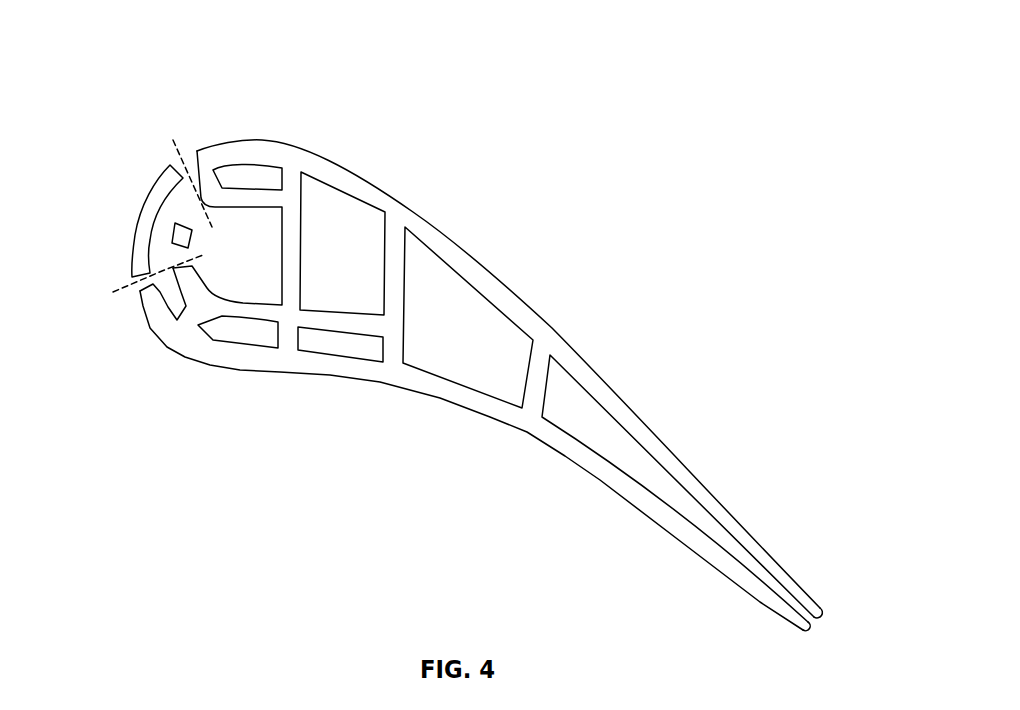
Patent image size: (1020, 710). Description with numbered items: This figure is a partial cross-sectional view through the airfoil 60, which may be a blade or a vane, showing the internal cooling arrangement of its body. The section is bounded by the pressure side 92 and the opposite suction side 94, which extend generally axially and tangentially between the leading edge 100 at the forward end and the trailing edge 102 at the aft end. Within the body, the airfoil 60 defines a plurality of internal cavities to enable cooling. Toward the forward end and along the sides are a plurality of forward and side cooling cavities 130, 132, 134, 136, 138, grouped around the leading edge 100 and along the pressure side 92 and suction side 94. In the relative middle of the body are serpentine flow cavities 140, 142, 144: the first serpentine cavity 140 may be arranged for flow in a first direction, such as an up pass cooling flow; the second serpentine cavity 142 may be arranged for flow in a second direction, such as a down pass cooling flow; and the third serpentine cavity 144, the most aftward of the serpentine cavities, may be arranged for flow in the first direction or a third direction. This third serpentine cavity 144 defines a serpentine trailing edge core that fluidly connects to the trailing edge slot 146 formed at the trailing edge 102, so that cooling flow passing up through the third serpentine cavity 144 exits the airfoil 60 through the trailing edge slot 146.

The airfoil 60 is at (474, 360).
The pressure side 92 is at (527, 432).
The suction side 94 is at (482, 260).
The leading edge 100 is at (130, 232).
The trailing edge 102 is at (817, 620).
The forward and side cooling cavity 130 is at (240, 336).
The forward and side cooling cavity 132 is at (332, 342).
The forward and side cooling cavity 134 is at (175, 230).
The forward and side cooling cavity 136 is at (265, 176).
The forward and side cooling cavity 138 is at (262, 220).
The first serpentine cavity 140 is at (337, 206).
The second serpentine cavity 142 is at (484, 323).
The third serpentine cavity 144 is at (578, 405).
The trailing edge slot 146 is at (817, 627).